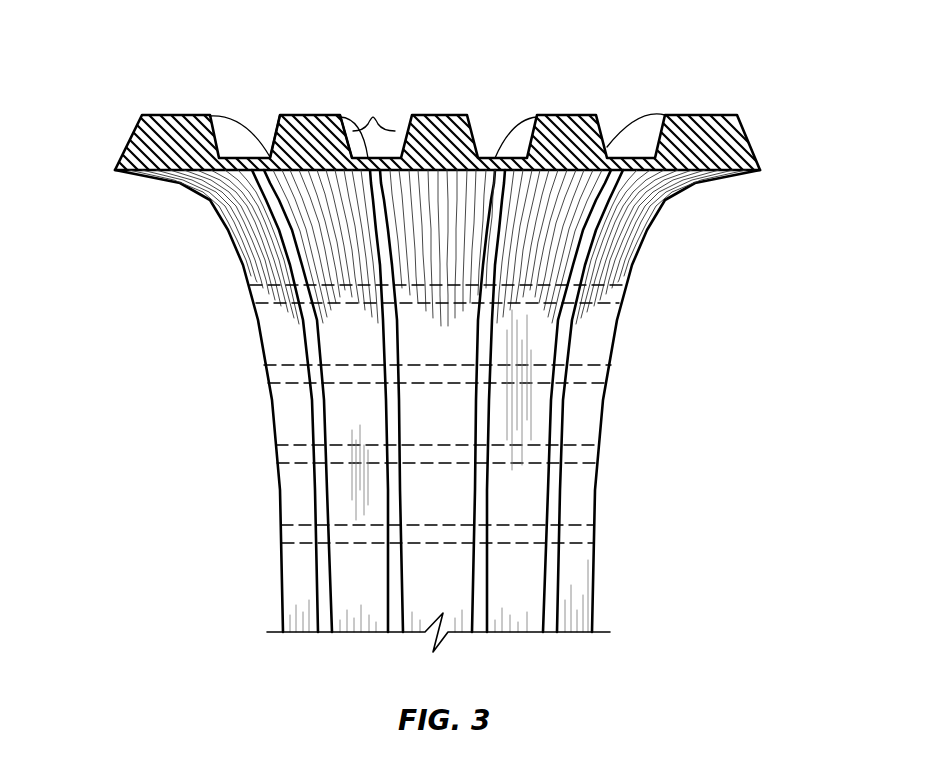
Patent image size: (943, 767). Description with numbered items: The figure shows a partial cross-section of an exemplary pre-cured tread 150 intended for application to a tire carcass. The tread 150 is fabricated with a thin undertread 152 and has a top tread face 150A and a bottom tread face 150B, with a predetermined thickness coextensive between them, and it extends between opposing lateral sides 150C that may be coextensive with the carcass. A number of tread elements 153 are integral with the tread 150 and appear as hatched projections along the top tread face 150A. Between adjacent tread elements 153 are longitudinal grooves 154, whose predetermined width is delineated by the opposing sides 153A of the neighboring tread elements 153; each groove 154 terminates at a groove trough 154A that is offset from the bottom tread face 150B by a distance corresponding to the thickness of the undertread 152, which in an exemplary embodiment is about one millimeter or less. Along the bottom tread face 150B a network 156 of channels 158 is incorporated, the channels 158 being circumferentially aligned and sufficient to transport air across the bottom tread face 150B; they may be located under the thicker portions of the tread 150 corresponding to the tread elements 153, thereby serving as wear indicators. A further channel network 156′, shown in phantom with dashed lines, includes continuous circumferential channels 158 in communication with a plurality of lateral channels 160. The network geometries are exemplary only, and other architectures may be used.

The pre-cured tread 150 is at (128, 50).
The top tread face 150A is at (310, 115).
The bottom tread face 150B is at (385, 341).
The lateral sides 150C is at (128, 141).
The undertread 152 is at (250, 172).
The tread elements 153 is at (180, 115).
The opposing sides of adjacent tread elements 153A is at (373, 117).
The longitudinal grooves 154 is at (238, 157).
The groove trough 154A is at (492, 157).
The channel network 156 is at (393, 410).
The channel network 156′ is at (595, 303).
The channels 158 is at (397, 634).
The lateral channels 160 is at (277, 370).